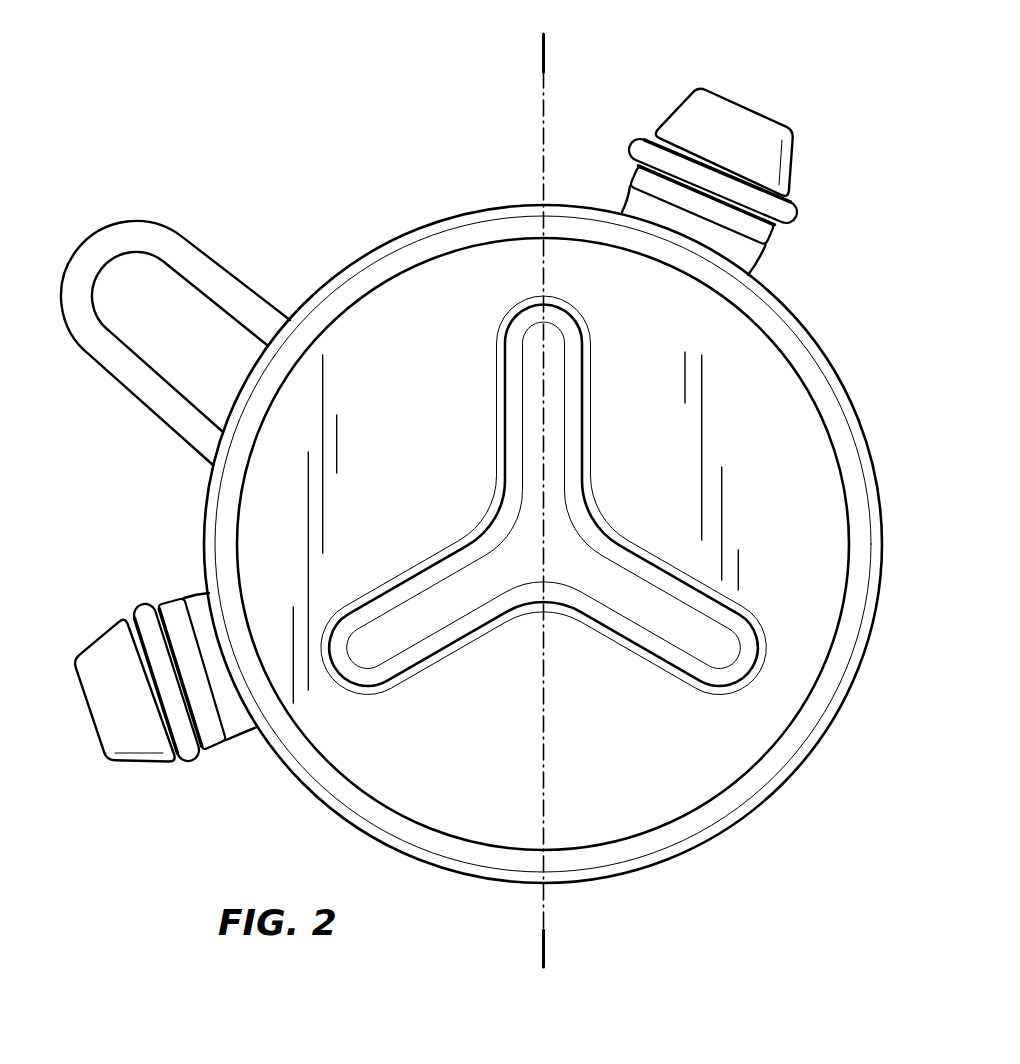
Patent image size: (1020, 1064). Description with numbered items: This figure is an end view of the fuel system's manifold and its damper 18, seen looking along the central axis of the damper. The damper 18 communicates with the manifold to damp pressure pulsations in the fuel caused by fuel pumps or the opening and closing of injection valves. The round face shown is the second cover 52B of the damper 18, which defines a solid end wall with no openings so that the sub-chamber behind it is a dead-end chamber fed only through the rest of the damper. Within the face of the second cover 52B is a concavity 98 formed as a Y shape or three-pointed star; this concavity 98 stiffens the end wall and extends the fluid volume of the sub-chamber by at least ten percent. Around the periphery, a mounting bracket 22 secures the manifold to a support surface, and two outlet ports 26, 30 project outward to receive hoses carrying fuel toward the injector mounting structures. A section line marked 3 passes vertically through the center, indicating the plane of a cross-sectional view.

The damper 18 is at (316, 256).
The mounting bracket 22 is at (89, 248).
The outlet port 26 is at (760, 132).
The outlet port 30 is at (112, 725).
The second cover 52B is at (754, 408).
The concavity 98 is at (760, 625).
The section line 3- 3 is at (530, 53).